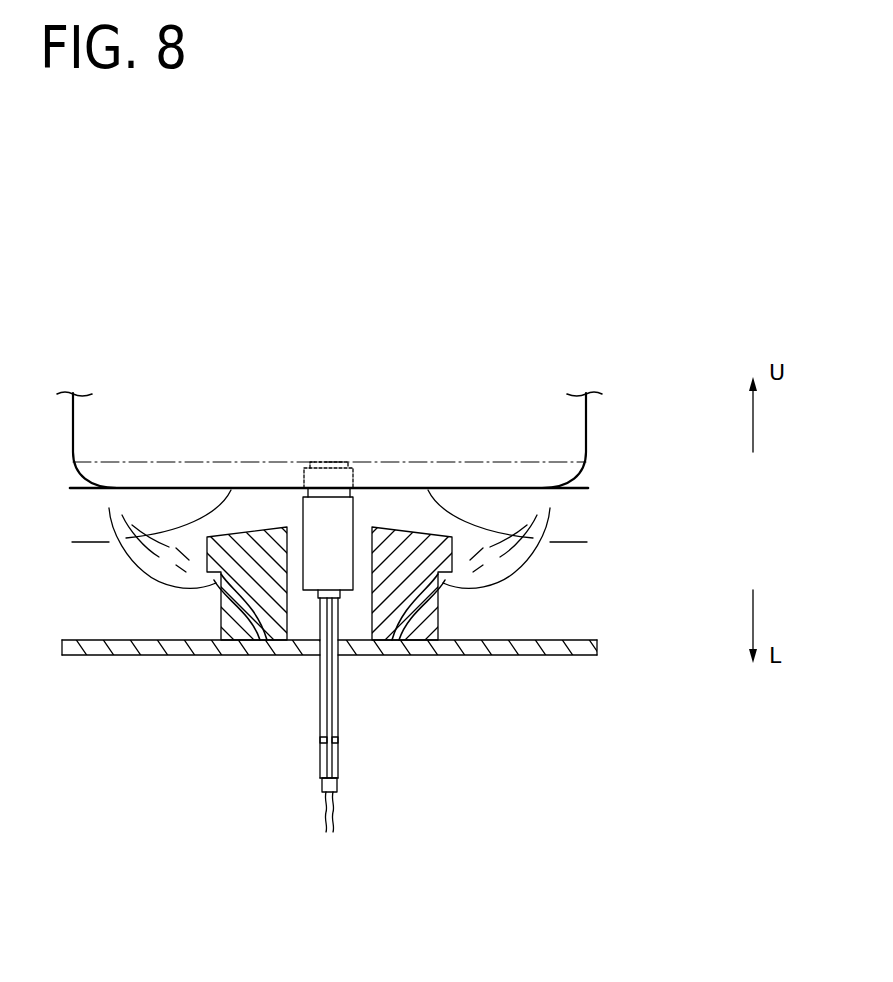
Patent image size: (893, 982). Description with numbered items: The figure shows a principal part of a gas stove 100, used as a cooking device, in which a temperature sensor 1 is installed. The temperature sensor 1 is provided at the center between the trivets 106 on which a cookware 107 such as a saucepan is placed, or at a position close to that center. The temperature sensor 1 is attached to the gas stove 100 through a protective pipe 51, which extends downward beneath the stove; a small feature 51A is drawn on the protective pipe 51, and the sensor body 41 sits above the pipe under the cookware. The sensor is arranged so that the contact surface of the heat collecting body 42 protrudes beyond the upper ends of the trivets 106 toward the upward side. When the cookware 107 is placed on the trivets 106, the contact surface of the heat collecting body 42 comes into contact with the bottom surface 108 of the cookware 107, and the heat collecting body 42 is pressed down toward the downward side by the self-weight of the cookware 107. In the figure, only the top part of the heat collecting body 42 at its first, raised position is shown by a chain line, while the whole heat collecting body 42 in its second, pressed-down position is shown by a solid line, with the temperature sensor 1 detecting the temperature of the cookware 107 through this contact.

The temperature sensor 1 is at (288, 500).
The sensor body 41 is at (402, 490).
The heat collecting body 42 is at (335, 488).
The protective pipe 51 is at (320, 730).
The stopper 51A is at (340, 740).
The gas stove 100 is at (632, 589).
The trivets 106 is at (553, 542).
The cookware 107 is at (587, 425).
The bottom surface 108 is at (412, 493).